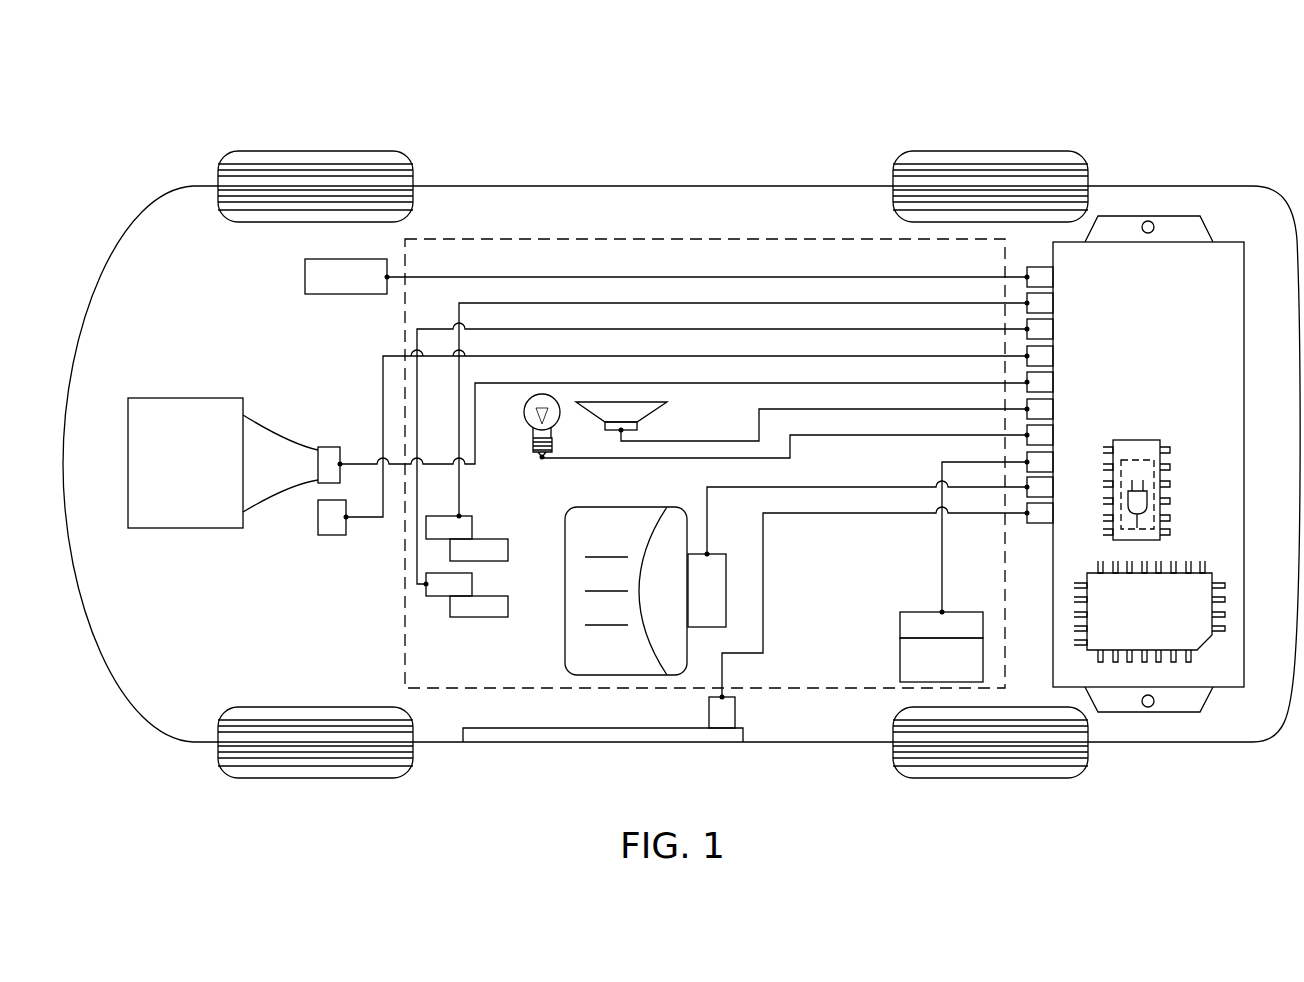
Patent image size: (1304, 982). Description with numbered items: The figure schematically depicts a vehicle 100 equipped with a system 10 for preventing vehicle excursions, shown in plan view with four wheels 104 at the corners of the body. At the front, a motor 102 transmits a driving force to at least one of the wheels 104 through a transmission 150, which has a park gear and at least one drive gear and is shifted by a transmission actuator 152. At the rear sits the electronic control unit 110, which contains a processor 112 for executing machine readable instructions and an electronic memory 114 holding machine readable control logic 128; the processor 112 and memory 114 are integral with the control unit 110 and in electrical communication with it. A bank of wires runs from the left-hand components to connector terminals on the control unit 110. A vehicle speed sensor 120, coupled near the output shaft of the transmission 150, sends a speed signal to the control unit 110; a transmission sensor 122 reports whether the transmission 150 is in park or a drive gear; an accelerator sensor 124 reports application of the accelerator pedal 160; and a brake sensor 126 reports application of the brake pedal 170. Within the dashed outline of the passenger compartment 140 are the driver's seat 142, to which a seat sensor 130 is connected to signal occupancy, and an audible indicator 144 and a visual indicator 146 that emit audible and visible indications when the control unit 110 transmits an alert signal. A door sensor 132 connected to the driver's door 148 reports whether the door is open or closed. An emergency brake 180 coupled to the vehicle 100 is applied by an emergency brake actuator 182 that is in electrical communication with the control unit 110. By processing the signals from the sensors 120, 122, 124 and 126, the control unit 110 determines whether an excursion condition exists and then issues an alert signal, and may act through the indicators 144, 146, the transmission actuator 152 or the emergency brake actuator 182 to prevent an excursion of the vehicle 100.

The system for preventing vehicle excursions 10 is at (116, 90).
The vehicle 100 is at (622, 178).
The motor 102 is at (190, 398).
The wheels 104 is at (319, 151).
The electronic control unit 110 is at (1223, 250).
The processor 112 is at (1207, 571).
The electronic memory 114 is at (1170, 492).
The vehicle speed sensor 120 is at (305, 278).
The transmission sensor 122 is at (330, 535).
The accelerator sensor 124 is at (472, 533).
The brake sensor 126 is at (426, 590).
The machine readable control logic 128 is at (1137, 459).
The seat sensor 130 is at (730, 570).
The door sensor 132 is at (735, 710).
The passenger compartment 140 is at (779, 224).
The driver's seat 142 is at (644, 507).
The audible indicator 144 is at (660, 404).
The visual indicator 146 is at (528, 426).
The driver's door 148 is at (640, 742).
The transmission 150 is at (283, 432).
The transmission actuator 152 is at (330, 447).
The accelerator pedal 160 is at (485, 561).
The brake pedal 170 is at (478, 617).
The emergency brake 180 is at (900, 664).
The emergency brake actuator 182 is at (900, 622).